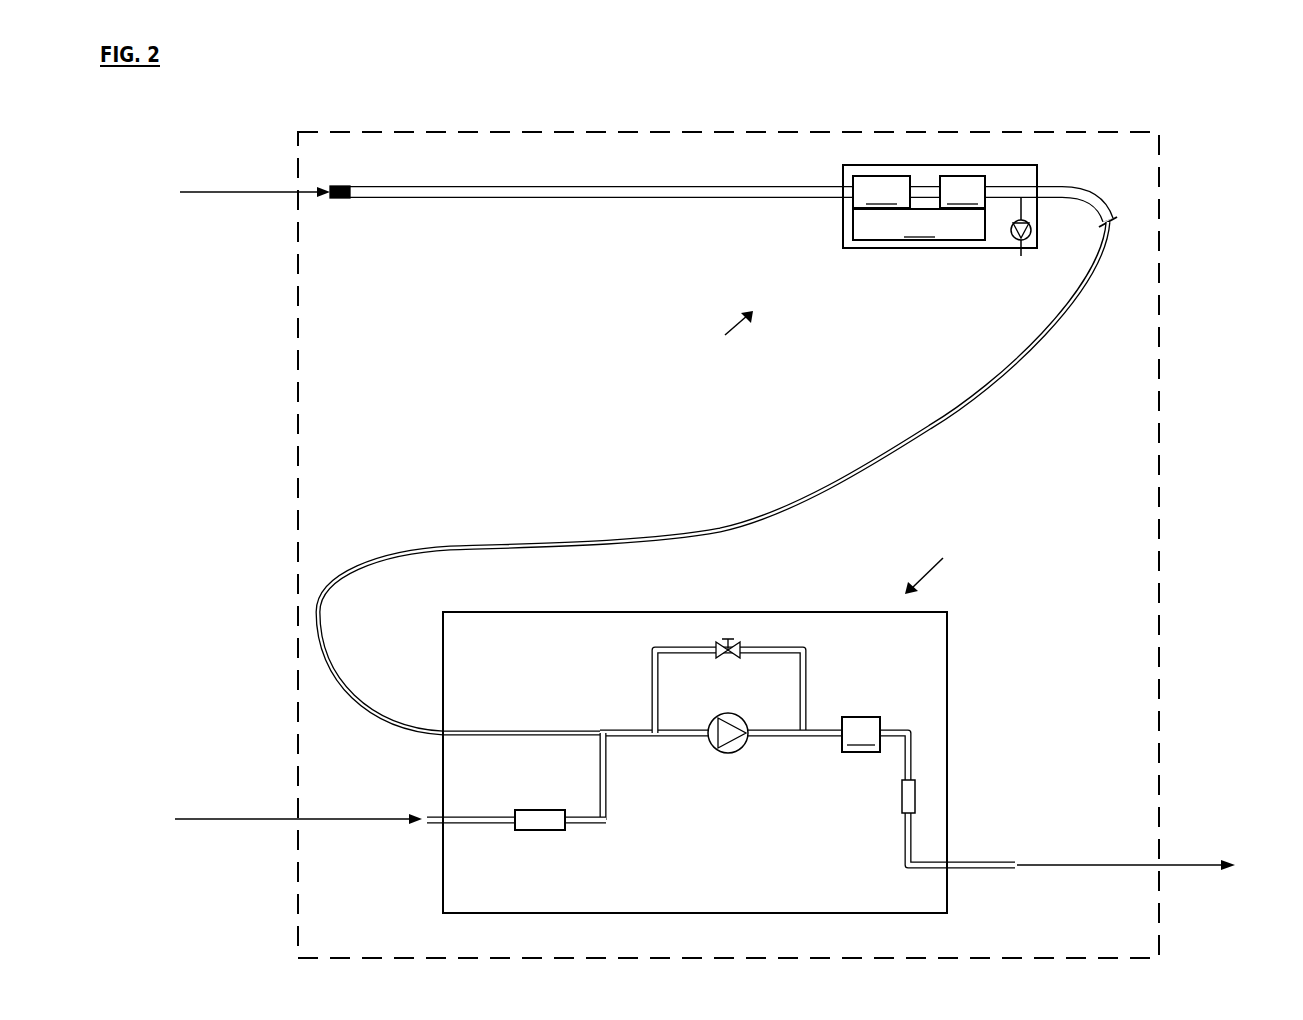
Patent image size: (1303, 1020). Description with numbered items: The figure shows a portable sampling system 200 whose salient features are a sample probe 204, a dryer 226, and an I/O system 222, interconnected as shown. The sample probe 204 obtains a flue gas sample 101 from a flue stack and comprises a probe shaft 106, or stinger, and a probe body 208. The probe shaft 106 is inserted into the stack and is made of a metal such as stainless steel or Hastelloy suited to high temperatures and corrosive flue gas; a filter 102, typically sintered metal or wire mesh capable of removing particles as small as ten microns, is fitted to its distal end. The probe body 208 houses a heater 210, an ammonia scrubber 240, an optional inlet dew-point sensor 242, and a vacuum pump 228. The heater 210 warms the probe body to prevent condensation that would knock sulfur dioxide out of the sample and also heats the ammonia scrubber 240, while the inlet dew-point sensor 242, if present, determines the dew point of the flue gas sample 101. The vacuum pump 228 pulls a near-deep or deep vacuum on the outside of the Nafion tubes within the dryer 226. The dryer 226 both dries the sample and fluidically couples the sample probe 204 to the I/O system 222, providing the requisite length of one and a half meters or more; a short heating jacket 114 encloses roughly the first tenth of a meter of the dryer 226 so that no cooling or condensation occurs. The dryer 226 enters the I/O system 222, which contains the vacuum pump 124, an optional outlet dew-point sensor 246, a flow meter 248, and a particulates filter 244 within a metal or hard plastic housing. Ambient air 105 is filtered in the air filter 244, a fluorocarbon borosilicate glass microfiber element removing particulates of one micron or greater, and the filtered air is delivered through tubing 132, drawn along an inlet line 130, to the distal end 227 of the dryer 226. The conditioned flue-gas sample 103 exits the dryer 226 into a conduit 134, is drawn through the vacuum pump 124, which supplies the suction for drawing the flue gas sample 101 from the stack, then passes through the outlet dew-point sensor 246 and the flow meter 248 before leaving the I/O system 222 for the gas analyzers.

The portable sampling system 200 is at (728, 532).
The flue gas sample 101 is at (253, 234).
The filter 102 is at (340, 200).
The probe shaft 106 is at (597, 200).
The sample probe 204 is at (727, 337).
The probe body 208 is at (843, 248).
The ammonia scrubber 240 is at (881, 192).
The inlet dew-point sensor 242 is at (962, 192).
The heater 210 is at (919, 224).
The vacuum pump 228 is at (1012, 244).
The heating jacket 114 is at (1106, 196).
The dryer 226 is at (1088, 230).
The I/O system 222 is at (709, 723).
The distal end of dryer 227 is at (602, 730).
The vacuum pump 124 is at (737, 712).
The conduit 134 is at (640, 740).
The outlet dew-point sensor 246 is at (861, 734).
The flow meter 248 is at (900, 800).
The tubing 132 is at (610, 785).
The ambient air inlet line 130 is at (468, 822).
The air filter 244 is at (537, 826).
The air 105 is at (298, 846).
The conditioned flue-gas sample 103 is at (1128, 834).